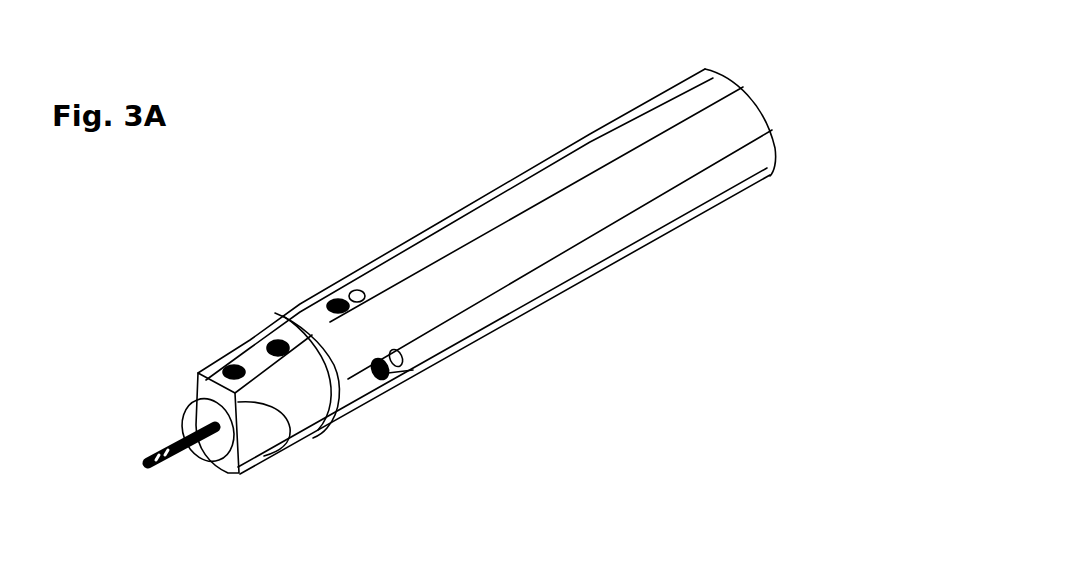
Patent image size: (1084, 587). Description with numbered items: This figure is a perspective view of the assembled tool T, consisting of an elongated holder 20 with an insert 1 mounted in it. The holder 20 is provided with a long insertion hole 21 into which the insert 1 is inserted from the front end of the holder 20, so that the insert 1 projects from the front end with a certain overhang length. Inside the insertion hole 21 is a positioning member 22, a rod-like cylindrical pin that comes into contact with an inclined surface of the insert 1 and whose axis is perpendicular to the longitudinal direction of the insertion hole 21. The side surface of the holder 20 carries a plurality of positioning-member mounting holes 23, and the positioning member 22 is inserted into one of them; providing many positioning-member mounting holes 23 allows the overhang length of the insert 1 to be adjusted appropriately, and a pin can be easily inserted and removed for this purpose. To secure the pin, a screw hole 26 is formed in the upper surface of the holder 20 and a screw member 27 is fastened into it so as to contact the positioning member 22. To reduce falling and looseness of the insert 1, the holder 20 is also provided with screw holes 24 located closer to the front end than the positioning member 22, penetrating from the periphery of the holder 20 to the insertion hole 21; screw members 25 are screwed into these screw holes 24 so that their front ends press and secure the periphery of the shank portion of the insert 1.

The tool T is at (520, 162).
The insert 1 is at (183, 455).
The holder 20 is at (310, 446).
The insertion hole 21 is at (193, 422).
The positioning member 22 is at (400, 393).
The positioning-member mounting holes 23 is at (410, 385).
The screw holes 24 is at (277, 339).
The screw members 25 is at (278, 345).
The screw hole 26 is at (356, 291).
The screw member 27 is at (336, 299).